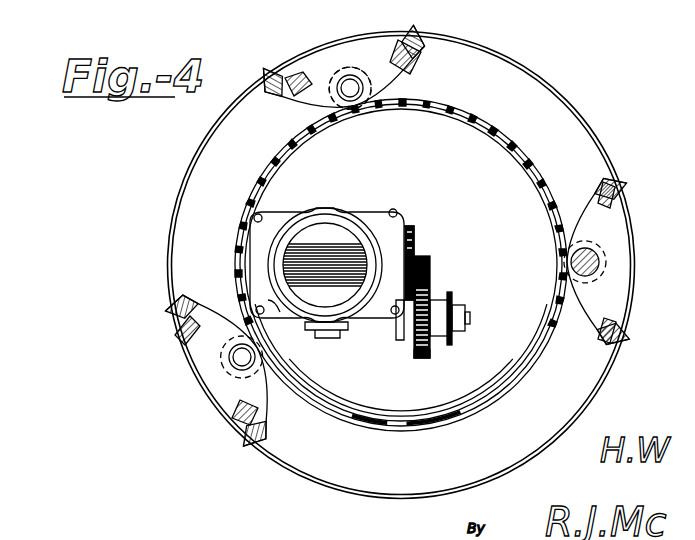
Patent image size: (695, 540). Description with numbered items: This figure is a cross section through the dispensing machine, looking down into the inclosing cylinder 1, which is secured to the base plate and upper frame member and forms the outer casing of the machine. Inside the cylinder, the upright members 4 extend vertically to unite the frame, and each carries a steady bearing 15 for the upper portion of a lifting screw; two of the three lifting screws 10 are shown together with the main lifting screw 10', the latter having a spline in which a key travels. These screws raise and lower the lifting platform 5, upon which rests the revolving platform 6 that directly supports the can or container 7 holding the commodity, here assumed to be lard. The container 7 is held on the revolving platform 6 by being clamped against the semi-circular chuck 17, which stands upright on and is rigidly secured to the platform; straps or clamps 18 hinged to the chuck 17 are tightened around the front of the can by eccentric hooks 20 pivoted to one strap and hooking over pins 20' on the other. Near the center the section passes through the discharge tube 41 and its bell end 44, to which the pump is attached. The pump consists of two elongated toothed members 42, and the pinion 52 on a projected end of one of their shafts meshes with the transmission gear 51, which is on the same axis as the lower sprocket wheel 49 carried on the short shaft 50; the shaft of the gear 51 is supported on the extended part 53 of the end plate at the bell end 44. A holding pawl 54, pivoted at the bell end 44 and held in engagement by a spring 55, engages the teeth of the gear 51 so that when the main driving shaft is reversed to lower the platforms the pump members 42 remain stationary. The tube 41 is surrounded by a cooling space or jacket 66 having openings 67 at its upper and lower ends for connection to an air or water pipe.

The inclosing cylinder 1 is at (548, 94).
The upright members 4 is at (290, 96).
The lifting platform 5 is at (345, 70).
The revolving platform 6 is at (509, 392).
The can or container 7 is at (471, 143).
The lifting screws 10 is at (300, 239).
The main lifting screw 10' is at (557, 258).
The steady bearings 15 is at (322, 68).
The semi-circular chuck 17 is at (472, 160).
The straps or clamps 18 is at (530, 372).
The eccentric hooks 20 is at (411, 441).
The pins 20' is at (462, 439).
The discharge tube 41 is at (302, 312).
The elongated toothed members 42 is at (345, 252).
The bell end 44 is at (312, 235).
The lower sprocket wheel 49 is at (452, 302).
The short shaft 50 is at (470, 318).
The transmission gear 51 is at (423, 358).
The pinion 52 is at (431, 272).
The extended part 53 is at (400, 330).
The holding pawl 54 is at (415, 252).
The spring 55 is at (416, 238).
The cooling space or jacket 66 is at (334, 210).
The openings 67 is at (330, 338).